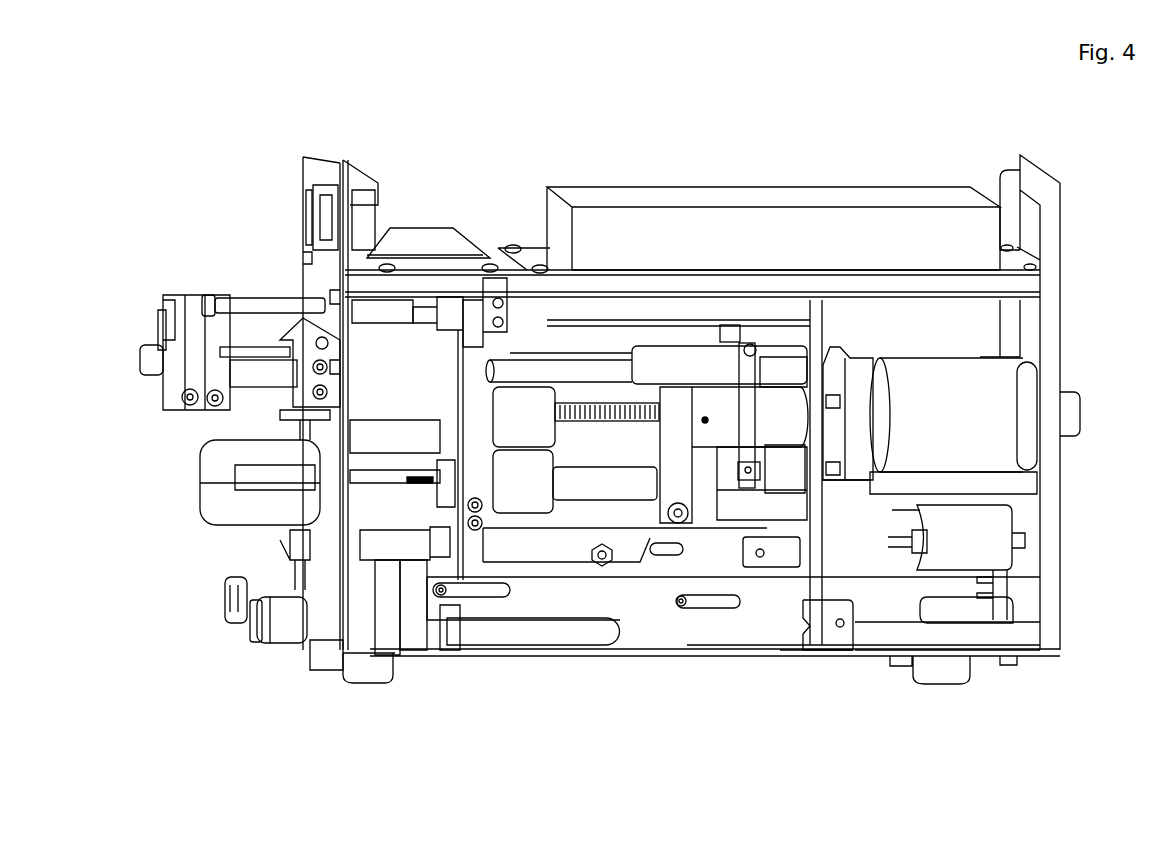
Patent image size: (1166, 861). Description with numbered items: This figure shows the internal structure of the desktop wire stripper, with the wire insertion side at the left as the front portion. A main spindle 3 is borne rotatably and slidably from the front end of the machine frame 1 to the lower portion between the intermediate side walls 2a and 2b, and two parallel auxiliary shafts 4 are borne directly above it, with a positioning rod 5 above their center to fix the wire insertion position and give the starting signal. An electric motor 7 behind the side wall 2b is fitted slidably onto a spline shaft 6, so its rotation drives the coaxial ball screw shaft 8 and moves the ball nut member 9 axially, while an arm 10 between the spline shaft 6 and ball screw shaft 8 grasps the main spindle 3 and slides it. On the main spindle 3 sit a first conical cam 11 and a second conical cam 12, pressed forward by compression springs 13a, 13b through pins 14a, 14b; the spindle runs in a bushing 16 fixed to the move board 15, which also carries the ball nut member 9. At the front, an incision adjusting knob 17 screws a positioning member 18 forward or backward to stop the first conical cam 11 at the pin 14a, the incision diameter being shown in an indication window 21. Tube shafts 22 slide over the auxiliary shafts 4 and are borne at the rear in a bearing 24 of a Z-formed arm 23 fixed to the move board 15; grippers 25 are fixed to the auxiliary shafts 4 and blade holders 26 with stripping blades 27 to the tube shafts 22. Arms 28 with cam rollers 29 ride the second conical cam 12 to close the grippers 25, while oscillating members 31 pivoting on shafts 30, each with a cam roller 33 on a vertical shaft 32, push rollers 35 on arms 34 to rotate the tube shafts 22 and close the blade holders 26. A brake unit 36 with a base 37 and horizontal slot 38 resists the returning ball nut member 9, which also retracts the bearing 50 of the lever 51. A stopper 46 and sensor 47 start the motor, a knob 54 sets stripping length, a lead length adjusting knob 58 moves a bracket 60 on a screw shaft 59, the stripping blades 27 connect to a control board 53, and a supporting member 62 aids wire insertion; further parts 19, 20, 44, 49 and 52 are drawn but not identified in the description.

The machine frame 1 is at (967, 683).
The intermediate side wall 2a is at (318, 155).
The intermediate side wall 2b is at (813, 308).
The main spindle 3 is at (638, 635).
The auxiliary shaft 4 is at (542, 346).
The positioning rod 5 is at (266, 298).
The spline shaft 6 is at (767, 400).
The electric motor 7 is at (922, 375).
The ball screw shaft 8 is at (603, 402).
The ball nut member 9 is at (543, 395).
The arm 10 is at (683, 403).
The first conical cam 11 is at (400, 655).
The second conical cam 12 is at (825, 640).
The compression spring 13a is at (433, 655).
The compression spring 13b is at (853, 617).
The pin 14a is at (347, 680).
The pin 14b is at (797, 638).
The move board 15 is at (484, 620).
The bushing 16 is at (566, 580).
The incision adjusting knob 17 is at (380, 478).
The positioning member 18 is at (380, 490).
The lever 19 is at (226, 623).
The bracket 20 is at (338, 647).
The indication window 21 is at (315, 165).
The tube shaft 22 is at (253, 375).
The arm 23 is at (425, 290).
The bearing 24 is at (372, 187).
The gripper 25 is at (188, 372).
The blade holder 26 is at (198, 290).
The stripping blade 27 is at (168, 296).
The arm 28 is at (750, 345).
The cam roller 29 is at (762, 615).
The shaft 30 is at (294, 640).
The oscillating member 31 is at (234, 628).
The vertical shaft 32 is at (380, 503).
The cam roller 33 is at (343, 553).
The arm 34 is at (372, 388).
The roller 35 is at (372, 440).
The brake unit 36 is at (654, 610).
The base 37 is at (730, 620).
The horizontal slot 38 is at (684, 607).
The block 44 is at (400, 273).
The stopper 46 is at (228, 297).
The sensor 47 is at (548, 186).
The block 49 is at (458, 295).
The bearing 50 is at (506, 612).
The lever 51 is at (539, 600).
The plate 52 is at (472, 282).
The control board 53 is at (453, 228).
The knob 54 is at (241, 618).
The lead length adjusting knob 58 is at (267, 648).
The screw shaft 59 is at (385, 667).
The bracket 60 is at (438, 602).
The supporting member 62 is at (162, 325).